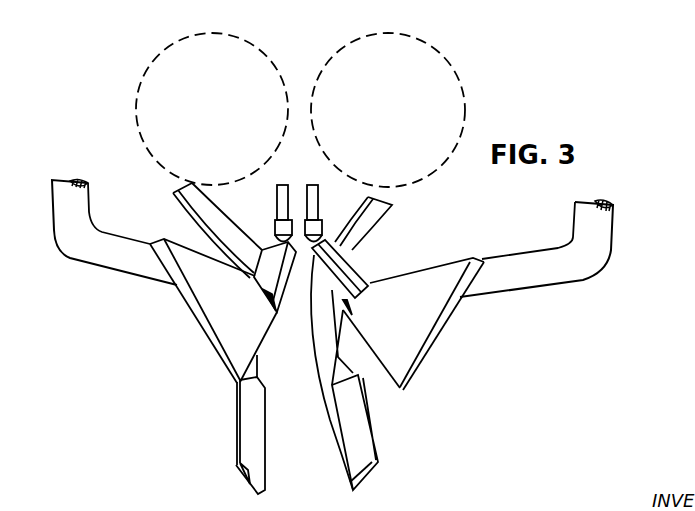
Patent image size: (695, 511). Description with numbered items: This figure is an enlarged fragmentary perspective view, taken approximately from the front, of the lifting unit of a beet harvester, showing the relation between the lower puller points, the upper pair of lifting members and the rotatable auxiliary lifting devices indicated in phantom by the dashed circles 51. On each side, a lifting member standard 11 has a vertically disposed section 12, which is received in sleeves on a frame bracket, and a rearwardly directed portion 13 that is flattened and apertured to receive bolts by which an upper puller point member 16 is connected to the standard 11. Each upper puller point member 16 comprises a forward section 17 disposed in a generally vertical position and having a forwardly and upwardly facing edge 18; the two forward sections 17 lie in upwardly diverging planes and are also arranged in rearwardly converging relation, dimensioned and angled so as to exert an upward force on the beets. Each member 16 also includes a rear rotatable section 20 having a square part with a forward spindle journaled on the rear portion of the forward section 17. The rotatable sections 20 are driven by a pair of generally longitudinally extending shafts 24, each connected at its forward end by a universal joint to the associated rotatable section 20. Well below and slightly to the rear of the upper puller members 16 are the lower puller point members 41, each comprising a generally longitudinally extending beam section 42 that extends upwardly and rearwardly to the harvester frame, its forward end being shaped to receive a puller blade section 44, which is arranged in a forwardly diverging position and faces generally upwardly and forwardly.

The lifting member standard 11 is at (69, 259).
The vertically disposed section 12 is at (80, 198).
The rearwardly directed portion 13 is at (122, 243).
The upper puller point member 16 is at (203, 336).
The forward section 17 is at (202, 295).
The forwardly and upwardly facing edge 18 is at (225, 365).
The rear rotatable section 20 is at (258, 262).
The shaft 24 is at (308, 186).
The lower puller point member 41 is at (235, 399).
The beam section 42 is at (193, 203).
The puller blade section 44 is at (240, 440).
The rolls (phantom) 51 is at (338, 52).